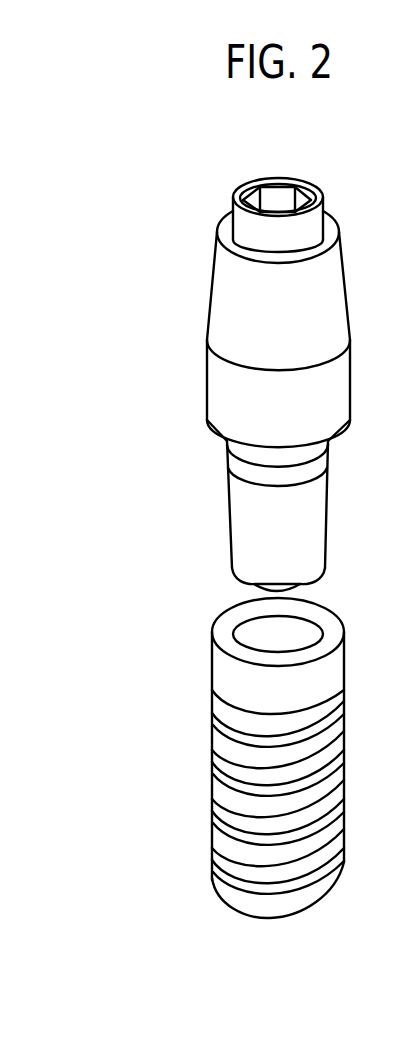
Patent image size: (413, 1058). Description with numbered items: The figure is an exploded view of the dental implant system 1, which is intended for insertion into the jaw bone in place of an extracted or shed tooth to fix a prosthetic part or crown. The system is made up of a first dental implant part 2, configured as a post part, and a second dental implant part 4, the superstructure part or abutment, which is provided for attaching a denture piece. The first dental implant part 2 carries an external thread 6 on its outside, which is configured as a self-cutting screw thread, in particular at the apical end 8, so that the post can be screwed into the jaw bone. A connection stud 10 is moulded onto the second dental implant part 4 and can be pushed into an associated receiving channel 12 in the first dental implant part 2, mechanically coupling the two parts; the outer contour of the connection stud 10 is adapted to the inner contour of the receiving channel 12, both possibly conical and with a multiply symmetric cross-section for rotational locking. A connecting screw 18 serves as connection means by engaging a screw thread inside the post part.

The dental implant system 1 is at (152, 426).
The first dental implant part 2 is at (322, 672).
The second dental implant part 4 is at (328, 297).
The external thread 6 is at (322, 757).
The apical end 8 is at (275, 900).
The connection stud 10 is at (305, 532).
The receiving channel 12 is at (285, 636).
The connecting screw 18 is at (276, 237).